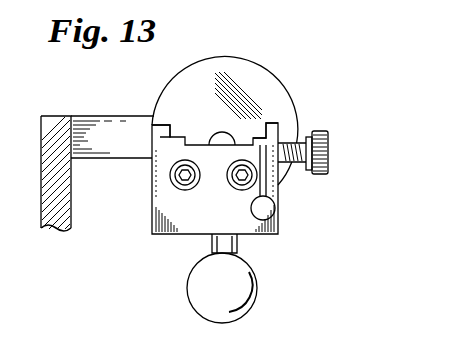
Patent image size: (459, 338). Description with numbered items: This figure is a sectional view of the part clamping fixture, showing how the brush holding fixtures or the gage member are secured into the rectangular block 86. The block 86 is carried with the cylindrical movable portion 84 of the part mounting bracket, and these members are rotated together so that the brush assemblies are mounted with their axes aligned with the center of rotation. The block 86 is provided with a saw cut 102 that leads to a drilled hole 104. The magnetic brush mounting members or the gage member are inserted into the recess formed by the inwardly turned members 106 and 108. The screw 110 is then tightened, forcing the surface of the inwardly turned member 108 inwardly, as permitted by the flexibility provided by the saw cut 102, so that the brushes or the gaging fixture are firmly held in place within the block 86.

The movable portion 84 is at (283, 107).
The rectangular block 86 is at (170, 213).
The saw cut 102 is at (266, 178).
The drilled hole 104 is at (271, 216).
The inwardly turned member 106 is at (173, 130).
The inwardly turned member 108 is at (259, 130).
The screw 110 is at (328, 146).